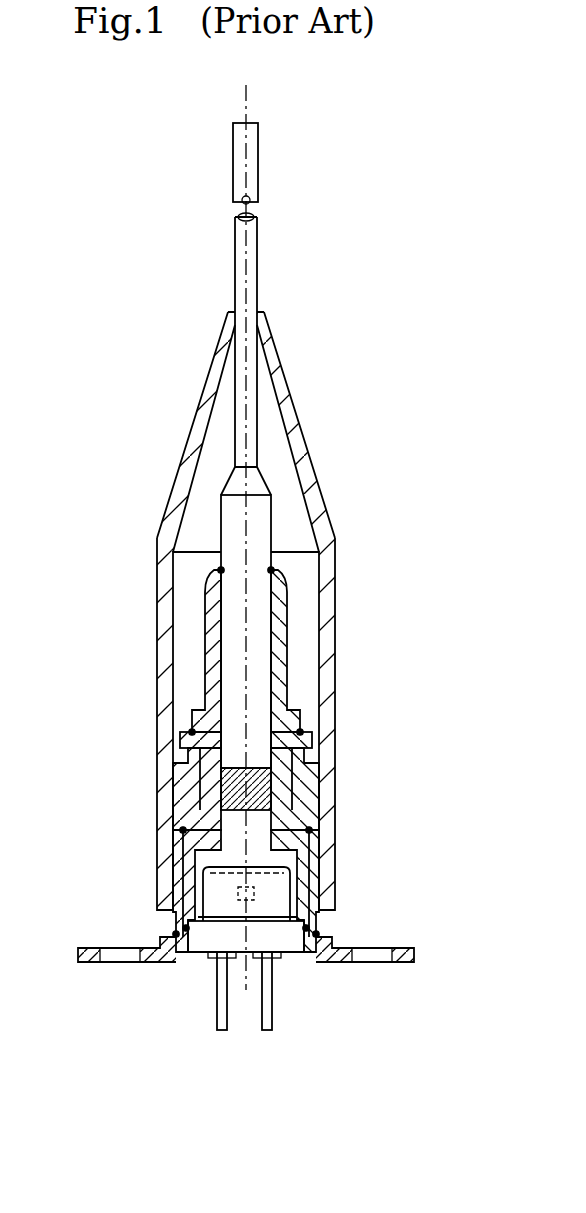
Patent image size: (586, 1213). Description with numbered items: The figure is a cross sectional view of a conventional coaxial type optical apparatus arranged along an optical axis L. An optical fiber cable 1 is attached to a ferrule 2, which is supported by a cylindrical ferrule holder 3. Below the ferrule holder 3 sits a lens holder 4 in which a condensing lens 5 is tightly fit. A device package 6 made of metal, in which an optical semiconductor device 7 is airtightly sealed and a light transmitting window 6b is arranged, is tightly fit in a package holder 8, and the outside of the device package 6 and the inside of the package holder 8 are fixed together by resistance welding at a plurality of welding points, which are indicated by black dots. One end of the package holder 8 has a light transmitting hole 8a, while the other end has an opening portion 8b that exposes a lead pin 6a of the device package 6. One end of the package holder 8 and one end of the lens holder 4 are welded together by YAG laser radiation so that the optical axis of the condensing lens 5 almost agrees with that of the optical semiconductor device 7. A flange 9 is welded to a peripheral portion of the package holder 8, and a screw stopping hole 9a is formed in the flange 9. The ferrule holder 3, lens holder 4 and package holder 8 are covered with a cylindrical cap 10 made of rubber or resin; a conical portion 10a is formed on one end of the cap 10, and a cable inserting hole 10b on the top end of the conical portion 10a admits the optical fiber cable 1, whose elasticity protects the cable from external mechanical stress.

The optical axis L is at (246, 112).
The optical fiber cable 1 is at (258, 253).
The ferrule 2 is at (257, 623).
The ferrule holder 3 is at (283, 673).
The lens holder 4 is at (290, 785).
The condensing lens 5 is at (235, 782).
The device package 6 is at (286, 945).
The lead pin 6a is at (216, 1020).
The light transmitting window 6b is at (212, 878).
The optical semiconductor device 7 is at (233, 898).
The package holder 8 is at (310, 882).
The light transmitting hole 8a is at (258, 836).
The opening portion 8b is at (308, 940).
The flange 9 is at (79, 950).
The screw stopping hole 9a is at (112, 958).
The cap 10 is at (157, 628).
The conical portion 10a is at (207, 398).
The cable inserting hole 10b is at (231, 320).